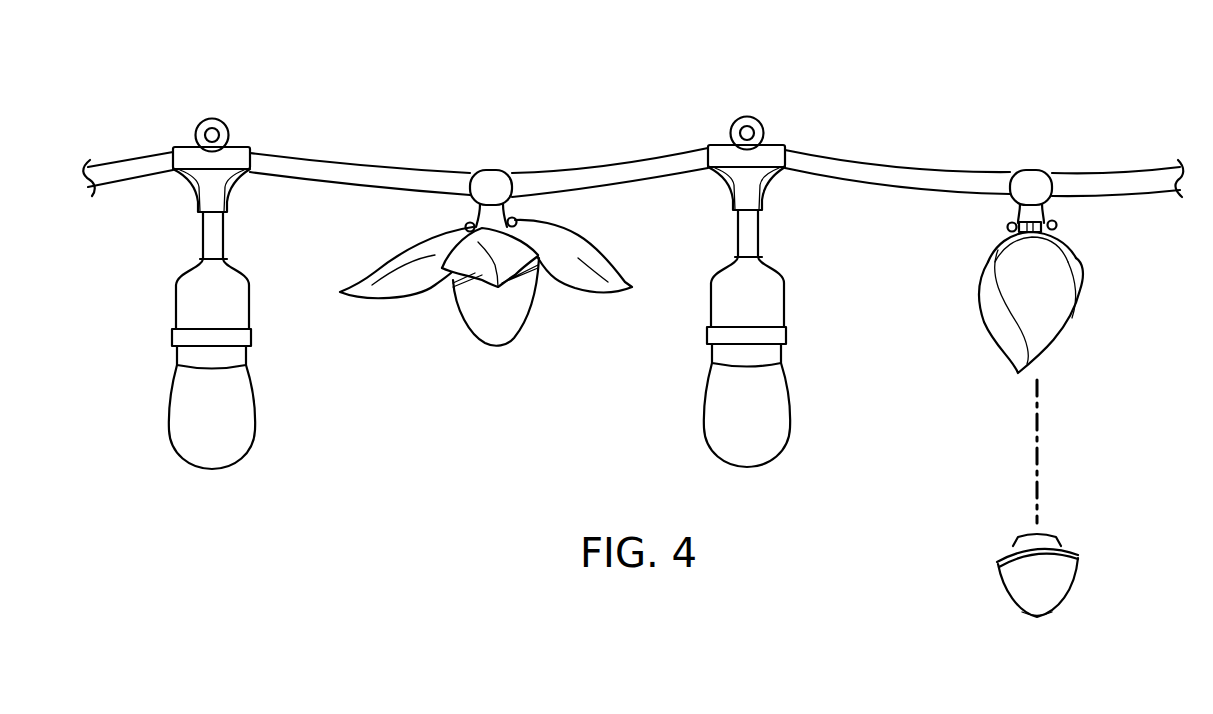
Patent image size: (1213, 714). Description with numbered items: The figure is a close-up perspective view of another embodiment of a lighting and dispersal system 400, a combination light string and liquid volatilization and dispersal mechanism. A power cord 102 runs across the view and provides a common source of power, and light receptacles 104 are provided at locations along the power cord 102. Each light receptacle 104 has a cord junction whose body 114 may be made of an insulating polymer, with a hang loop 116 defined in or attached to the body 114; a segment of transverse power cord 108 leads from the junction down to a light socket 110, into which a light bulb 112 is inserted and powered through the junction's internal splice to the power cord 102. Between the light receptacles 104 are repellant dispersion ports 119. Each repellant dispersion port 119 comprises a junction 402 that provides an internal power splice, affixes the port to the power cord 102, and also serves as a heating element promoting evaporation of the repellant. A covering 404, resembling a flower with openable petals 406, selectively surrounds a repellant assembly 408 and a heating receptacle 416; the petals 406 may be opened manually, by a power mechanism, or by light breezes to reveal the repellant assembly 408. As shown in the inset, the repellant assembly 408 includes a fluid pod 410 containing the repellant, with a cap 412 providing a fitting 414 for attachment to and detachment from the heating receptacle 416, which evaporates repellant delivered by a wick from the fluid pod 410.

The lighting and dispersal system 400 is at (918, 72).
The power cord 102 is at (358, 167).
The light receptacle 104 is at (760, 257).
The transverse power cord 108 is at (737, 230).
The light socket 110 is at (785, 281).
The light bulb 112 is at (786, 385).
The body 114 is at (769, 186).
The hang loop 116 is at (744, 118).
The repellant dispersion port 119 is at (507, 148).
The junction 402 is at (488, 177).
The covering 404 is at (739, 305).
The petals 406 is at (583, 260).
The repellant assembly 408 is at (811, 467).
The fluid pod 410 is at (1038, 618).
The cap 412 is at (1075, 542).
The fitting 414 is at (1028, 535).
The heating receptacle 416 is at (540, 277).